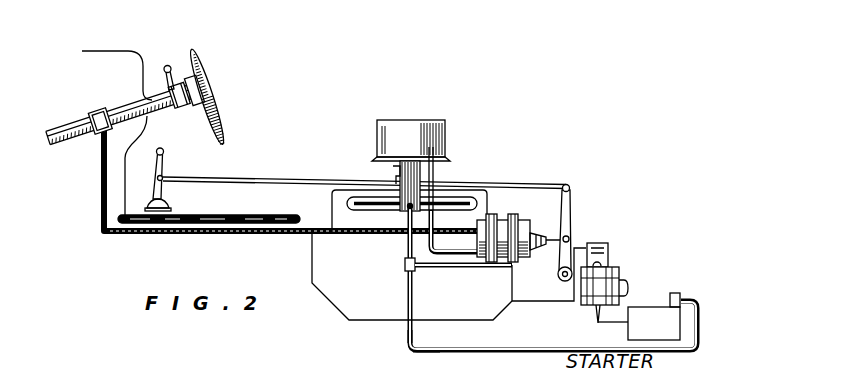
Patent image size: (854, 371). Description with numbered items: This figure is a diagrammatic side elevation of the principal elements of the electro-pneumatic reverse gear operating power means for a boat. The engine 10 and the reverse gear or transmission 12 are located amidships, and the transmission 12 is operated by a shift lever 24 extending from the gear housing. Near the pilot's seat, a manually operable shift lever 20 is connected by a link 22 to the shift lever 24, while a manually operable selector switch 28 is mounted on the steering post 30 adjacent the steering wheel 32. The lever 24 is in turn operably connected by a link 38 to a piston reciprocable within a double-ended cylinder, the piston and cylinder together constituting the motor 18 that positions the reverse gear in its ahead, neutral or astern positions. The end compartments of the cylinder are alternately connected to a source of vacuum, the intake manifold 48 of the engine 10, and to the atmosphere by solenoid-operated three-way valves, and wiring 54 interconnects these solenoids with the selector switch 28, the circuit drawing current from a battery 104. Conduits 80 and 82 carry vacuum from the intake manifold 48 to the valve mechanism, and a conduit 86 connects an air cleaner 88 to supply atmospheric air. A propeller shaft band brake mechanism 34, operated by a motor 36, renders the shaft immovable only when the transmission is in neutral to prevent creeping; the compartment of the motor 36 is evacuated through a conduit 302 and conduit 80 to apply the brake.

The engine 10 is at (343, 291).
The reverse gear or transmission 12 is at (546, 295).
The reverse gear operating power means 18 is at (502, 216).
The shift lever 20 is at (170, 168).
The link 22 is at (284, 168).
The shift lever 24 is at (571, 215).
The selector switch 28 is at (177, 112).
The steering post 30 is at (157, 90).
The steering wheel 32 is at (203, 75).
The propeller shaft band brake mechanism 34 is at (609, 256).
The motor 36 is at (643, 318).
The link 38 is at (553, 237).
The intake manifold 48 is at (363, 208).
The wiring 54 is at (253, 237).
The conduit 80 is at (408, 242).
The conduit 82 is at (442, 268).
The conduit 86 is at (436, 178).
The air cleaner 88 is at (416, 126).
The battery 104 is at (377, 356).
The conduit 302 is at (478, 338).